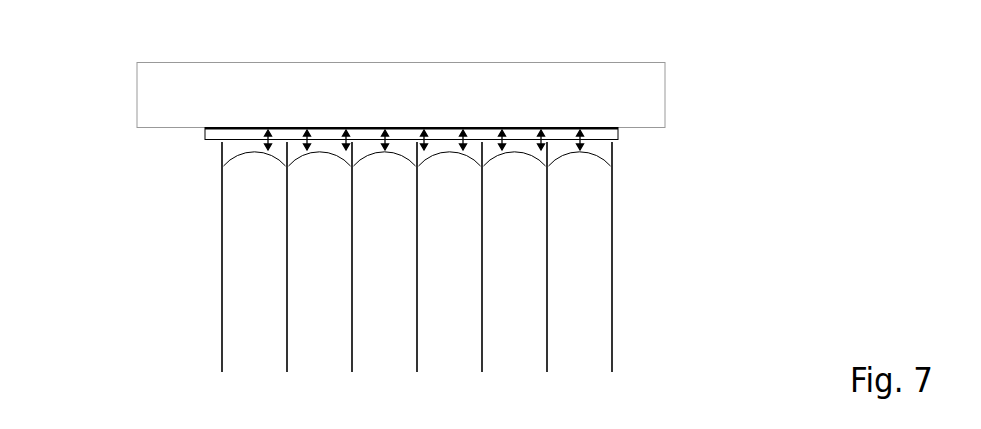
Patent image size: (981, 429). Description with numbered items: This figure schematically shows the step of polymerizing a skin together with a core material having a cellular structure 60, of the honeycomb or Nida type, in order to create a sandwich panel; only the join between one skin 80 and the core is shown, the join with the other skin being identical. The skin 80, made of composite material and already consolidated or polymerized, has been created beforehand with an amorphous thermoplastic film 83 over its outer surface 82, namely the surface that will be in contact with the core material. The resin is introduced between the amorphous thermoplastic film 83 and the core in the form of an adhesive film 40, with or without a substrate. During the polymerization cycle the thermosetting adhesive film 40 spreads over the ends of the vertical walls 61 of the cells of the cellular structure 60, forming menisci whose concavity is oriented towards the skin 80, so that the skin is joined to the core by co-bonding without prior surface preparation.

The skin 80 is at (127, 101).
The outer surface 82 is at (655, 128).
The amorphous thermoplastic film 83 is at (600, 133).
The cellular structure 60 is at (396, 257).
The vertical walls 61 is at (219, 153).
The adhesive film 40 is at (600, 152).